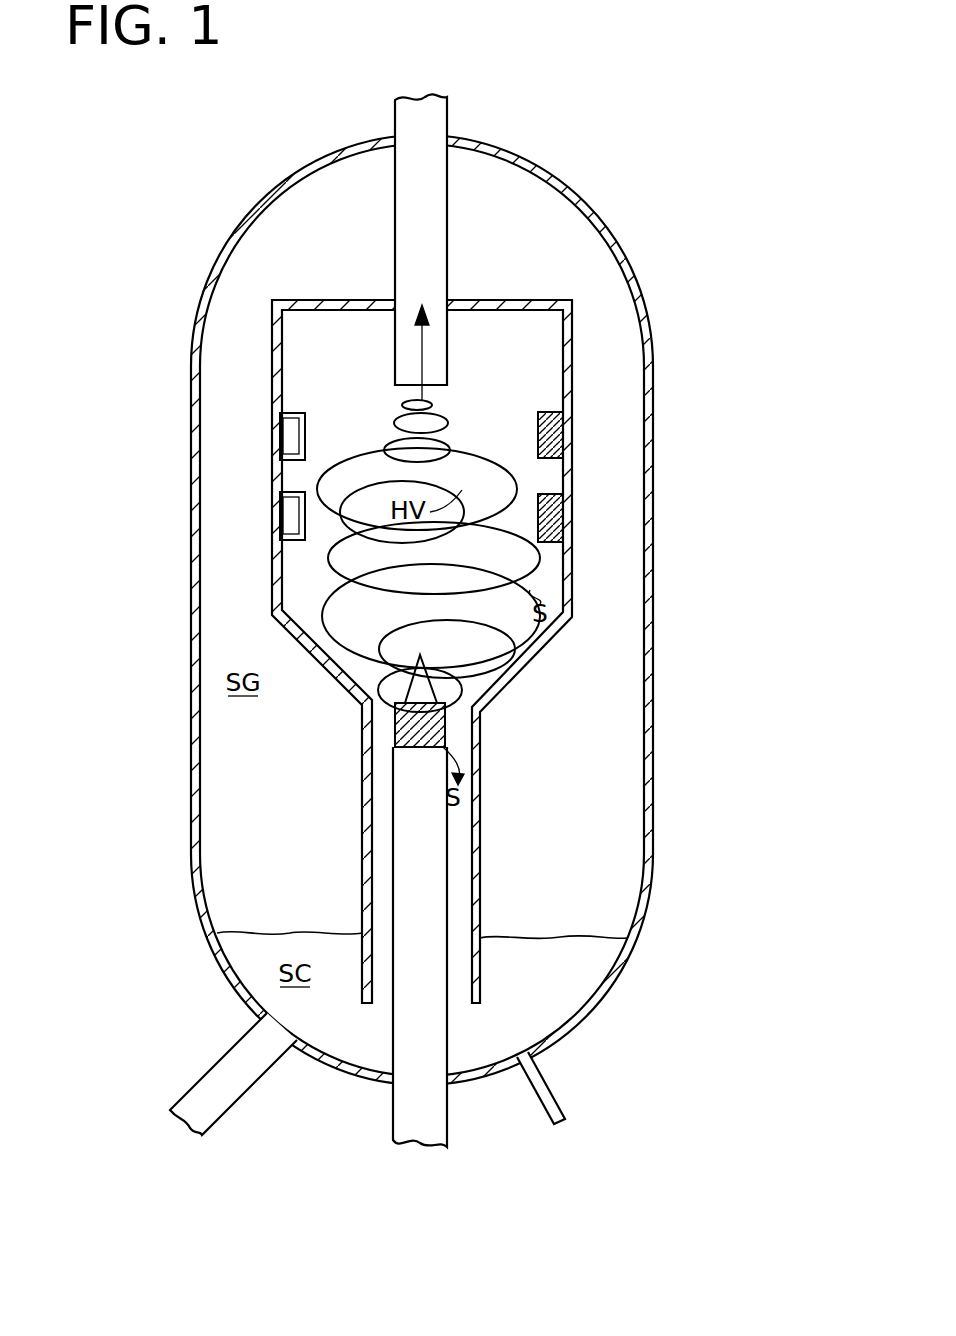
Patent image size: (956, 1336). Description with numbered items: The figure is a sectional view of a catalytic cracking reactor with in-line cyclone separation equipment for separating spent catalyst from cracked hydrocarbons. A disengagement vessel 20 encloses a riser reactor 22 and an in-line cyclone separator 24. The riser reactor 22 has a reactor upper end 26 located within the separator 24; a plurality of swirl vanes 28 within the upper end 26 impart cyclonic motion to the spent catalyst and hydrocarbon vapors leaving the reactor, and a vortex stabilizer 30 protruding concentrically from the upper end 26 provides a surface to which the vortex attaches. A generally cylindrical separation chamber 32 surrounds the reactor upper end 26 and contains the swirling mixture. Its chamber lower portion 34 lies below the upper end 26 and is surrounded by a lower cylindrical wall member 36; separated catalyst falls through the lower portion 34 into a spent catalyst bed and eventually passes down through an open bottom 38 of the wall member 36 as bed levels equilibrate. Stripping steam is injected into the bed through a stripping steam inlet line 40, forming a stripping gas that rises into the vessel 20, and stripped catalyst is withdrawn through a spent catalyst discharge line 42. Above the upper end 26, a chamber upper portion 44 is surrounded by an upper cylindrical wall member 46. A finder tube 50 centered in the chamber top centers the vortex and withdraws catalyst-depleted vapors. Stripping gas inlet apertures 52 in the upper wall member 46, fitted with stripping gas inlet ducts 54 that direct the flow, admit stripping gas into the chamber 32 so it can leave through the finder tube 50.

The disengagement vessel 20 is at (527, 153).
The riser reactor 22 is at (447, 840).
The in-line cyclone separator 24 is at (600, 355).
The reactor upper end 26 is at (447, 708).
The swirl vanes 28 is at (408, 726).
The vortex stabilizer 30 is at (420, 655).
The separation chamber 32 is at (320, 333).
The chamber lower portion 34 is at (387, 797).
The lower cylindrical wall member 36 is at (360, 877).
The open bottom 38 is at (458, 1006).
The stripping steam inlet line 40 is at (555, 1093).
The spent catalyst discharge line 42 is at (250, 1093).
The chamber upper portion 44 is at (522, 341).
The upper cylindrical wall member 46 is at (572, 580).
The finder tube 50 is at (447, 113).
The stripping gas inlet apertures 52 is at (293, 413).
The stripping gas inlet ducts 54 is at (305, 442).